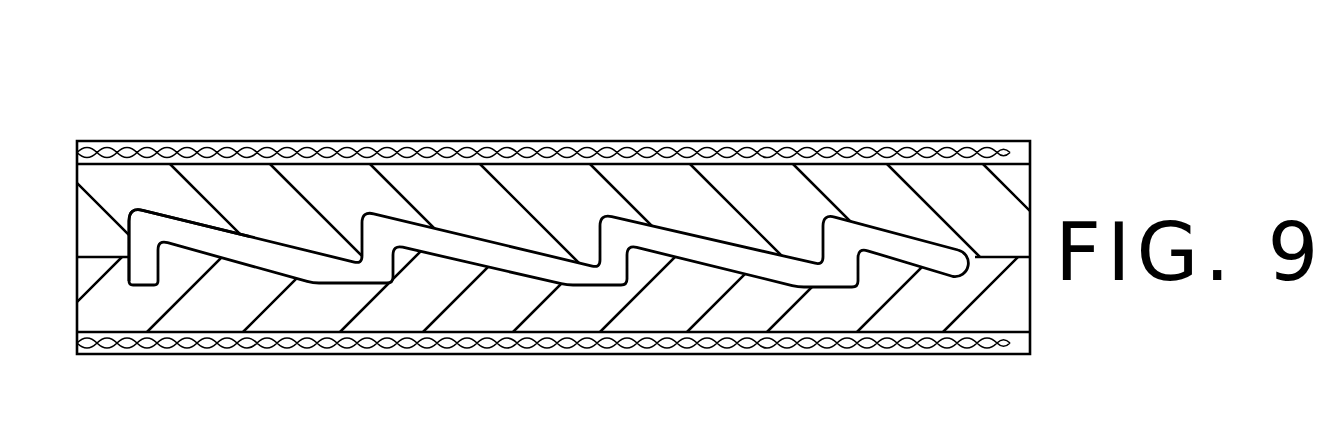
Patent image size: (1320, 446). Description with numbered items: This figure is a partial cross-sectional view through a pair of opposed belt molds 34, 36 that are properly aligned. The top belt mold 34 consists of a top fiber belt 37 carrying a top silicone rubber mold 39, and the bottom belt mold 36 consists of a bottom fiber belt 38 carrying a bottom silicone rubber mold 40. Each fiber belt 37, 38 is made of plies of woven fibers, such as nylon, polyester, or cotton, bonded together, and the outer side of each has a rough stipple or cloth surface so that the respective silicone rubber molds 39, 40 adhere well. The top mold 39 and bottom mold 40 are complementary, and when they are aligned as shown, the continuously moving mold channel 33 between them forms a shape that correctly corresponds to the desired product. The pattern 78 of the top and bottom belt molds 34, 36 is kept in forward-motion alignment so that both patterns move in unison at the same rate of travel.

The mold channel 33 is at (673, 248).
The top belt mold 34 is at (878, 127).
The bottom belt mold 36 is at (983, 372).
The top fiber belt 37 is at (435, 146).
The bottom fiber belt 38 is at (302, 335).
The top silicone rubber mold 39 is at (520, 223).
The bottom silicone rubber mold 40 is at (692, 305).
The pattern 78 is at (237, 230).